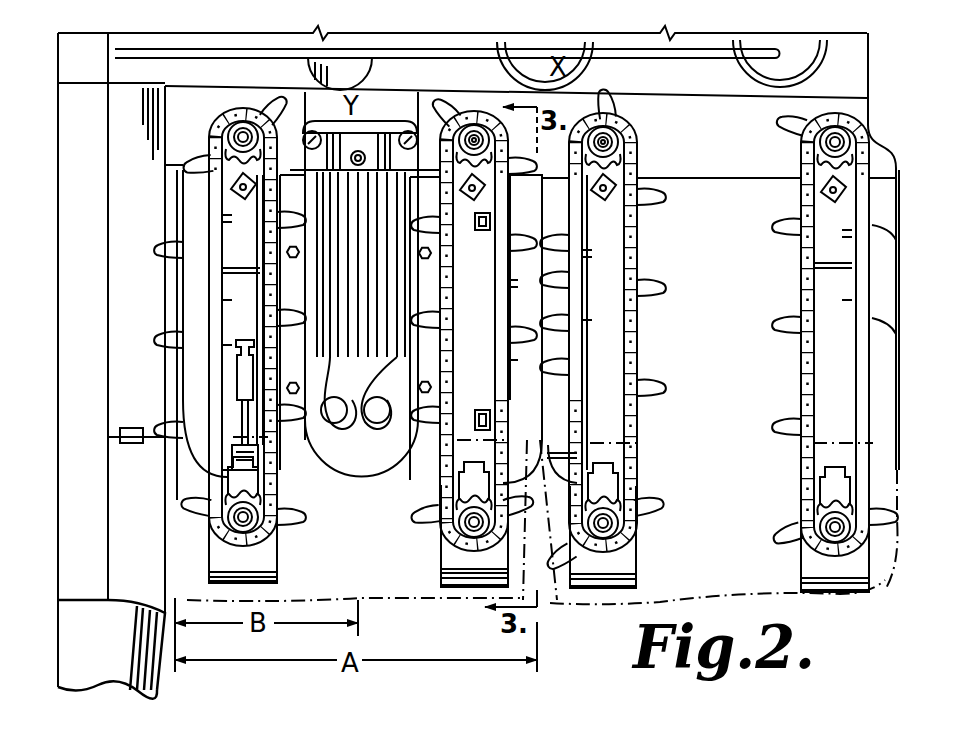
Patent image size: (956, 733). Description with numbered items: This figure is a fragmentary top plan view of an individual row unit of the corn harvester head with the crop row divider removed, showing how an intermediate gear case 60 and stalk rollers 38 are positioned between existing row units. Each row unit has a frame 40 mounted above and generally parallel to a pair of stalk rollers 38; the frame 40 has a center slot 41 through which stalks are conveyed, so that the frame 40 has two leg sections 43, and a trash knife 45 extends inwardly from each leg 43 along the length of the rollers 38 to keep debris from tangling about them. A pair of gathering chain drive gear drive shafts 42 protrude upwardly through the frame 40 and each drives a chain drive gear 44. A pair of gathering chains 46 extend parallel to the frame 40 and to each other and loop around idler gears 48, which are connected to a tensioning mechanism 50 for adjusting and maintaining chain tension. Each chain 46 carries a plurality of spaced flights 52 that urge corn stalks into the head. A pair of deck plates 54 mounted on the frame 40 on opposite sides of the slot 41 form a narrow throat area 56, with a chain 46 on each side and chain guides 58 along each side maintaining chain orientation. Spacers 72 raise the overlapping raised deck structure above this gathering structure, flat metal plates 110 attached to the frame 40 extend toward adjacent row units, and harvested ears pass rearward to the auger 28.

The auger 28 is at (491, 50).
The intermediate gear case 60 is at (300, 93).
The flat metal plate 110 is at (376, 118).
The chain drive gear 44 is at (466, 118).
The gathering chain drive gear drive shaft 42 is at (480, 142).
The chain guide 58 is at (213, 238).
The flight 52 is at (198, 341).
The tensioning mechanism 50 is at (238, 441).
The frame 40 is at (282, 550).
The stalk roller 38 is at (366, 458).
The trash knife 45 is at (400, 447).
The gathering chain 46 is at (440, 496).
The idler gear 48 is at (445, 530).
The center slot 41 is at (516, 558).
The leg section 43 is at (458, 562).
The spacer 72 is at (472, 200).
The deck plate 54 is at (526, 386).
The throat area 56 is at (578, 456).